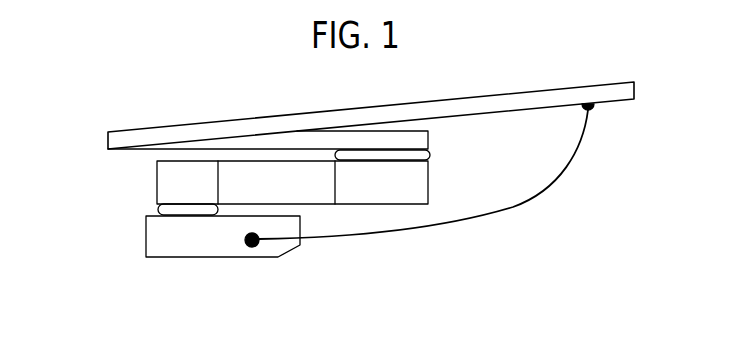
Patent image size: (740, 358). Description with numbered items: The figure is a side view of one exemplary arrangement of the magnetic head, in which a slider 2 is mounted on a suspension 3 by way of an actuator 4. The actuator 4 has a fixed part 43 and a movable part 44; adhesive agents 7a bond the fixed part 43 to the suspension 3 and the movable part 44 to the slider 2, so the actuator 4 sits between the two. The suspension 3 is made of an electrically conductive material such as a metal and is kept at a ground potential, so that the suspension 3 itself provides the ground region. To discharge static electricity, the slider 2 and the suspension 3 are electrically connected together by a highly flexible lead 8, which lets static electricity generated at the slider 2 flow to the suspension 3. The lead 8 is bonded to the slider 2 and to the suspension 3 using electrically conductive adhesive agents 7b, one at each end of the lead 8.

The slider 2 is at (148, 235).
The suspension 3 is at (188, 131).
The actuator 4 is at (147, 172).
The fixed part 43 is at (422, 189).
The movable part 44 is at (165, 193).
The adhesive agents 7a is at (430, 153).
The electrically conductive adhesive agents 7b is at (256, 247).
The lead 8 is at (485, 218).